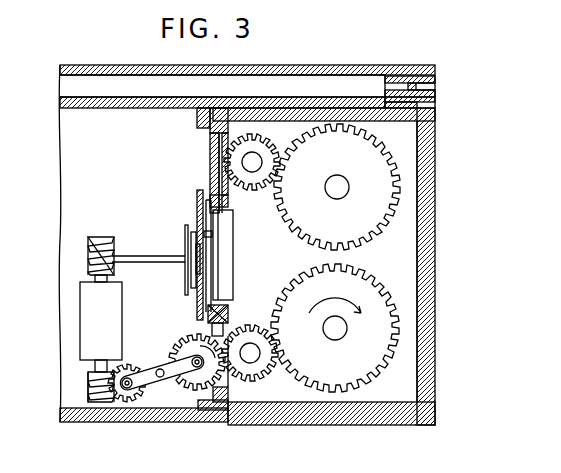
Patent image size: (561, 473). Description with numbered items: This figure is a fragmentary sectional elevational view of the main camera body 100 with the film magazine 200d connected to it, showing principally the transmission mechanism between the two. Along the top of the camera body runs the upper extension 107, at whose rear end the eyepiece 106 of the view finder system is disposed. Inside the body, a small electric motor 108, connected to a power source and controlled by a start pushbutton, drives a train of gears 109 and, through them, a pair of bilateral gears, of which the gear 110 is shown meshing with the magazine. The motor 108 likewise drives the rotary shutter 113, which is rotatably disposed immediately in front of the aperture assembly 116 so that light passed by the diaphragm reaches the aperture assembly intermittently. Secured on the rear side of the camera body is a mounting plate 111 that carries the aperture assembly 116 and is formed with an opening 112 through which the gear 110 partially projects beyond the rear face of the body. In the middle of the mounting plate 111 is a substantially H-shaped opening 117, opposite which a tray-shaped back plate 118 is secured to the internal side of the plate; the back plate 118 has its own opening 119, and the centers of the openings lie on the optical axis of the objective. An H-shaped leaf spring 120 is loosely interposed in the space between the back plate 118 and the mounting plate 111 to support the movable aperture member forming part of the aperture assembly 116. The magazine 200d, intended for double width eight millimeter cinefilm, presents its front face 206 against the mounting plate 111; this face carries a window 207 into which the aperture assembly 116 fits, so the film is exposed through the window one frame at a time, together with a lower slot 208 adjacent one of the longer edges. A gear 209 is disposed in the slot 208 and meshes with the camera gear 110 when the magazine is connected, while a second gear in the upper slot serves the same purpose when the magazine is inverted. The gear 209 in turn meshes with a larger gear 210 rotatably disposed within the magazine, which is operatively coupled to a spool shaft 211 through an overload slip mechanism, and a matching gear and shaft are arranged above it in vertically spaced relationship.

The main camera body 100 is at (74, 157).
The eyepiece 106 is at (420, 96).
The upper extension 107 is at (342, 65).
The small electric motor 108 is at (110, 304).
The train of gears 109 is at (144, 403).
The bilateral gear 110 is at (178, 352).
The mounting plate 111 is at (215, 147).
The opening 112 is at (213, 394).
The rotary shutter 113 is at (185, 228).
The aperture assembly 116 is at (236, 262).
The H-shaped opening 117 is at (197, 212).
The back plate 118 is at (202, 197).
The opening 119 is at (198, 262).
The H-shaped leaf spring 120 is at (214, 234).
The magazine 200d is at (447, 231).
The front face 206 is at (206, 318).
The window 207 is at (213, 166).
The lower slot 208 is at (232, 384).
The lower gear 209 is at (250, 326).
The gear 210 is at (386, 292).
The spool shaft 211 is at (338, 334).